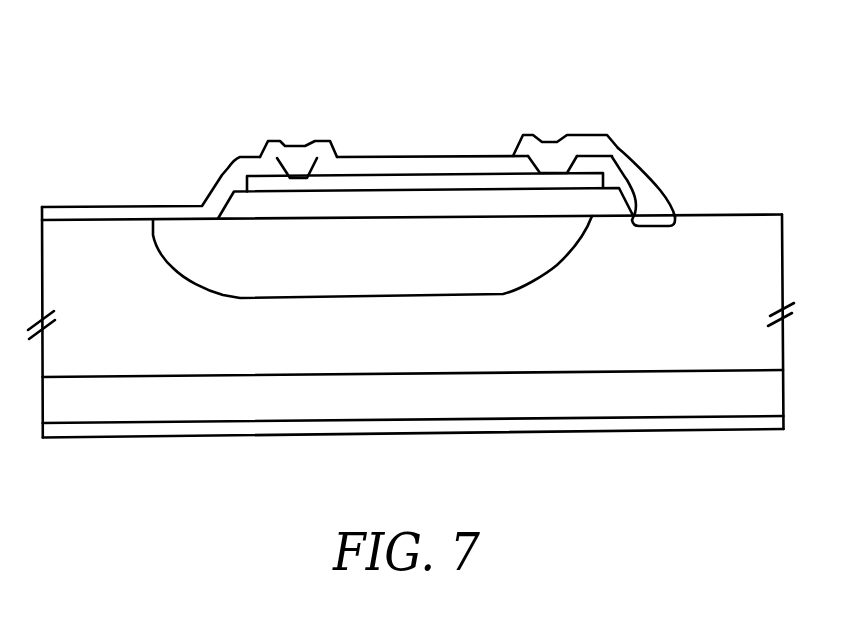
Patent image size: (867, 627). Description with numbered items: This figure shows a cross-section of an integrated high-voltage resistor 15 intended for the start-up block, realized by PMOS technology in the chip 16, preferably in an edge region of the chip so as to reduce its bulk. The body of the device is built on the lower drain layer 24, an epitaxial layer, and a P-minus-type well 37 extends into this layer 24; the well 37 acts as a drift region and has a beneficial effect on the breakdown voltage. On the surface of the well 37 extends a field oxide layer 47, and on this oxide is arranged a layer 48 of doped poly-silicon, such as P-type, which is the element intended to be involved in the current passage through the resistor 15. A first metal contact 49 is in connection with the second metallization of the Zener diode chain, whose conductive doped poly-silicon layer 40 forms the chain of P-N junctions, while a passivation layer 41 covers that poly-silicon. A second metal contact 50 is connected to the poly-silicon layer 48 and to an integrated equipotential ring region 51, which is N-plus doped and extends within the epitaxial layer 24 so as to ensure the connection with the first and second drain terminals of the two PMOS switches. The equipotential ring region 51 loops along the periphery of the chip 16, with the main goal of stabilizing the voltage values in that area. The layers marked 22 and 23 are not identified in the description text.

The high-voltage resistor 15 is at (774, 113).
The chip 16 is at (789, 250).
The back electrode 22 is at (235, 434).
The N+ substrate layer 23 is at (374, 415).
The lower drain layer 24 is at (202, 369).
The P-type well 37 is at (345, 280).
The doped conductive layer of poly-silicon 40 is at (206, 193).
The passivation layer 41 is at (363, 162).
The field oxide layer 47 is at (425, 203).
The doped poly-silicon layer 48 is at (428, 155).
The first metal contact 49 is at (291, 164).
The second metal contact 50 is at (617, 140).
The equipotential ring region 51 is at (654, 232).